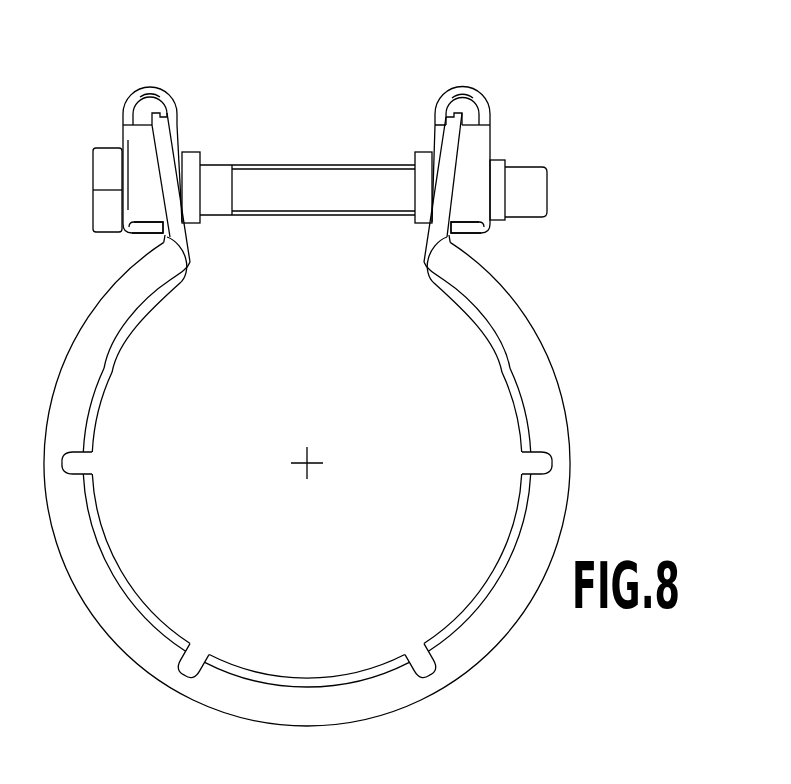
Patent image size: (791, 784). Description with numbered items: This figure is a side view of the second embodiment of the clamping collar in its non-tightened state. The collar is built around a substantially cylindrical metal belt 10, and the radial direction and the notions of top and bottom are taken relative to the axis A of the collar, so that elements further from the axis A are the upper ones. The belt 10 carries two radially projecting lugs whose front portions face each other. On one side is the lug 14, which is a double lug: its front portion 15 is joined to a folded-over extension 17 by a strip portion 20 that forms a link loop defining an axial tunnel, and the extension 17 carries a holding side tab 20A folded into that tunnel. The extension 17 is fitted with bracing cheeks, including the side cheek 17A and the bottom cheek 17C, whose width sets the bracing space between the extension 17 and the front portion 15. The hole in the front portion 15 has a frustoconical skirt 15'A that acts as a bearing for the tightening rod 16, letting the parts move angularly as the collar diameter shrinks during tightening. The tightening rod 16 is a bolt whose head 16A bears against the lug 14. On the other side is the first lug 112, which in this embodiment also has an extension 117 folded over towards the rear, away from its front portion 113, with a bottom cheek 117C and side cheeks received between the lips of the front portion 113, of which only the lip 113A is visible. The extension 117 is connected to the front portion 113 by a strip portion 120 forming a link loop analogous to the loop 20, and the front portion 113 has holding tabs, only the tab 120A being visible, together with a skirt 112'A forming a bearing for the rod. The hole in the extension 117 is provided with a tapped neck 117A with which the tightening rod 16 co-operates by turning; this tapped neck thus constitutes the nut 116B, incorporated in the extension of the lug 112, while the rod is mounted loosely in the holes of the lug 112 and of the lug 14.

The belt 10 is at (538, 350).
The axis A is at (309, 461).
The lug 14 is at (173, 92).
The front portion 15 is at (177, 236).
The skirt 15'A is at (225, 213).
The tightening rod 16 is at (319, 225).
The head 16A is at (103, 174).
The extension 17 is at (122, 128).
The bracing cheek 17A is at (130, 202).
The bracing cheek 17C is at (148, 238).
The strip portion 20 is at (143, 91).
The holding side tab 20A is at (159, 98).
The first lug 112 is at (466, 43).
The skirt 112'A is at (384, 256).
The front portion 113 is at (434, 150).
The lip 113A is at (441, 191).
The nut 116B is at (502, 202).
The extension 117 is at (492, 128).
The tapped neck 117A is at (468, 150).
The bottom cheek 117C is at (465, 233).
The strip portion 120 is at (477, 89).
The holding tab 120A is at (455, 112).